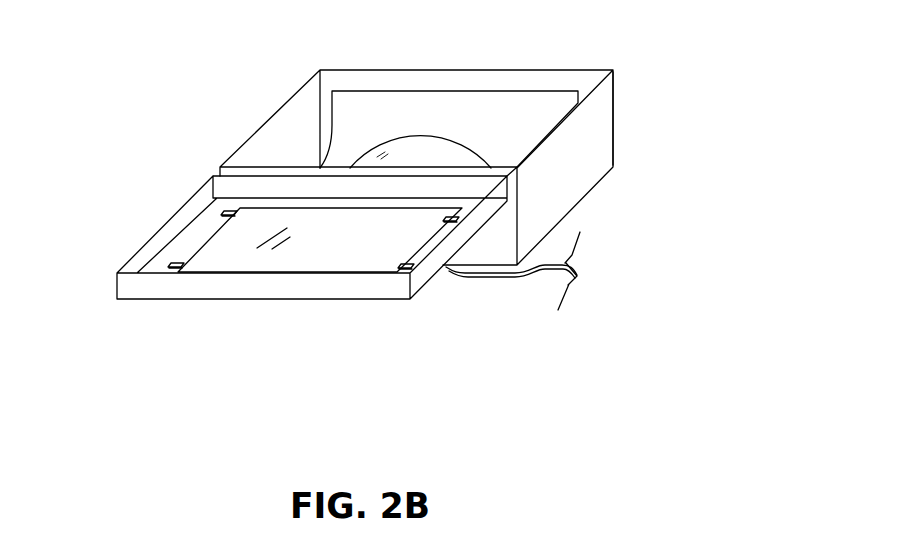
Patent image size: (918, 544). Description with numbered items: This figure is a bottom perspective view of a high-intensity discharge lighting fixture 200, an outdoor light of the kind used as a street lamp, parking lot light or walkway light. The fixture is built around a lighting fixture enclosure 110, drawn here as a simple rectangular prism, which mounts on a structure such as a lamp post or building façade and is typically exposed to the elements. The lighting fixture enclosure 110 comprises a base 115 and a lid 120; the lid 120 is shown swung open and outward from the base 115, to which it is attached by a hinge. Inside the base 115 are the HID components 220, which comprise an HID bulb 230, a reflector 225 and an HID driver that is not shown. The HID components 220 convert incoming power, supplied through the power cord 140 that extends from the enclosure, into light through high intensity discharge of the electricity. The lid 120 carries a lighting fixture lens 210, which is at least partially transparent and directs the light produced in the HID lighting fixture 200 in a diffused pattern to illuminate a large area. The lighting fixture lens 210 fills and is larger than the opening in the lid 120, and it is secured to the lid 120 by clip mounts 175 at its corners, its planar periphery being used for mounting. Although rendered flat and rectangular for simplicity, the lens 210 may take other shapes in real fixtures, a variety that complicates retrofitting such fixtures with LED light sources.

The HID lighting fixture 200 is at (158, 97).
The lighting fixture enclosure 110 is at (683, 83).
The base 115 is at (615, 135).
The lid 120 is at (148, 300).
The power cord 140 is at (502, 276).
The mount 175 is at (180, 262).
The lighting fixture lens 210 is at (212, 233).
The HID components 220 is at (535, 60).
The reflector 225 is at (443, 90).
The HID bulb 230 is at (420, 134).